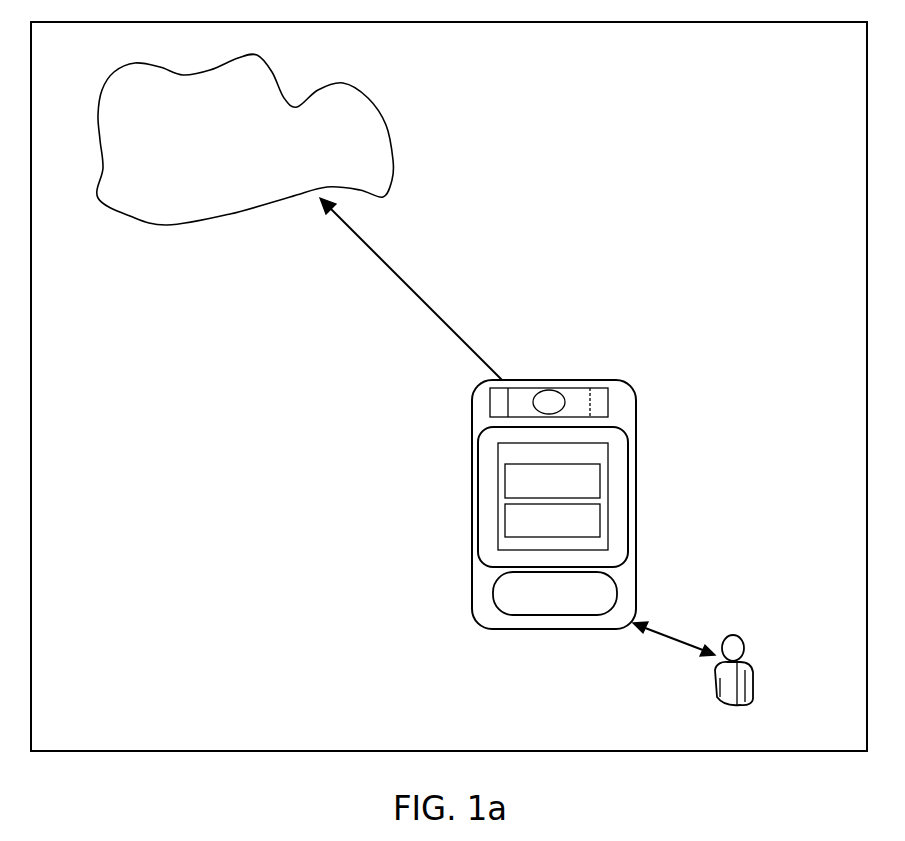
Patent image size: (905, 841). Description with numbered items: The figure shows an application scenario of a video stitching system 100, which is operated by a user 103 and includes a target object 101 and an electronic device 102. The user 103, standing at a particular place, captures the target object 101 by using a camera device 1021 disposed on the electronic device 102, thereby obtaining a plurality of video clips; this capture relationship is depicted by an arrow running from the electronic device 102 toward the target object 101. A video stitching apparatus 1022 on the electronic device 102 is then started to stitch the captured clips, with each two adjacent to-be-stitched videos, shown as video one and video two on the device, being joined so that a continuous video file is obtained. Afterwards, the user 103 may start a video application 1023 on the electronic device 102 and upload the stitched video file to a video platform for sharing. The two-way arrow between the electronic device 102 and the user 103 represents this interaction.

The video stitching system 100 is at (860, 48).
The target object 101 is at (262, 150).
The electronic device 102 is at (557, 630).
The camera device 1021 is at (593, 387).
The video stitching apparatus 1022 is at (498, 480).
The video application 1023 is at (493, 590).
The user 103 is at (760, 671).